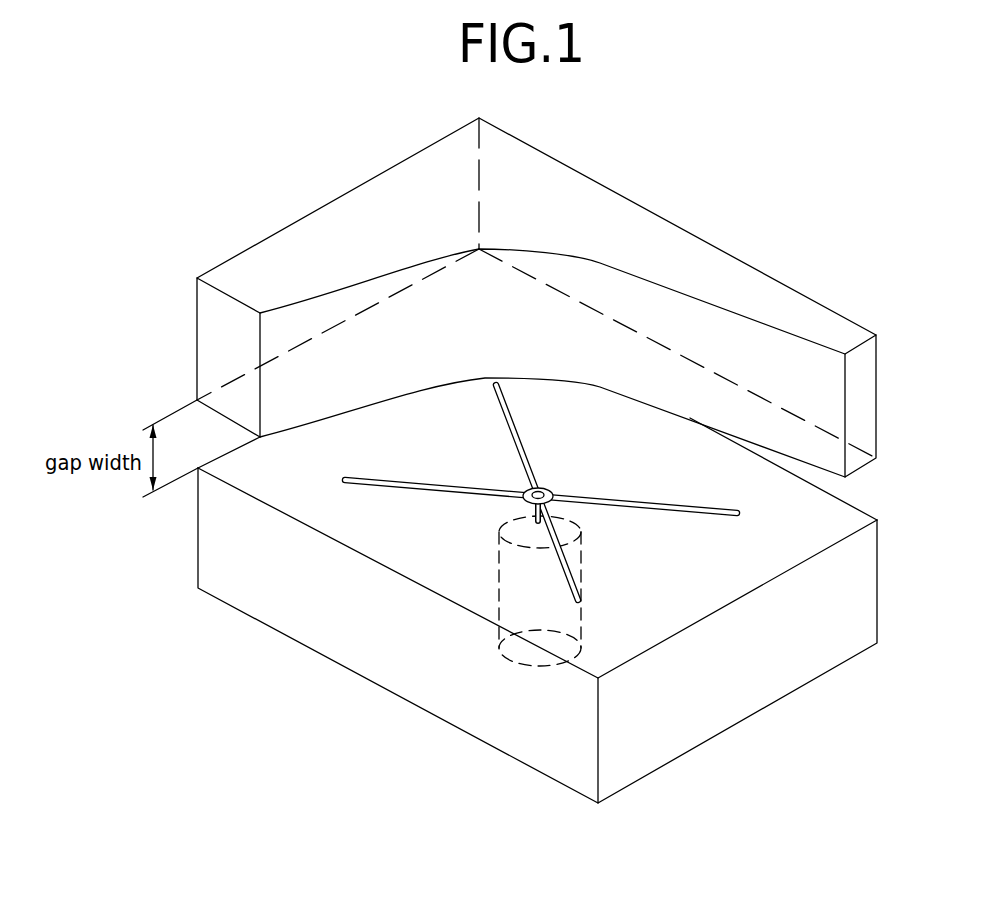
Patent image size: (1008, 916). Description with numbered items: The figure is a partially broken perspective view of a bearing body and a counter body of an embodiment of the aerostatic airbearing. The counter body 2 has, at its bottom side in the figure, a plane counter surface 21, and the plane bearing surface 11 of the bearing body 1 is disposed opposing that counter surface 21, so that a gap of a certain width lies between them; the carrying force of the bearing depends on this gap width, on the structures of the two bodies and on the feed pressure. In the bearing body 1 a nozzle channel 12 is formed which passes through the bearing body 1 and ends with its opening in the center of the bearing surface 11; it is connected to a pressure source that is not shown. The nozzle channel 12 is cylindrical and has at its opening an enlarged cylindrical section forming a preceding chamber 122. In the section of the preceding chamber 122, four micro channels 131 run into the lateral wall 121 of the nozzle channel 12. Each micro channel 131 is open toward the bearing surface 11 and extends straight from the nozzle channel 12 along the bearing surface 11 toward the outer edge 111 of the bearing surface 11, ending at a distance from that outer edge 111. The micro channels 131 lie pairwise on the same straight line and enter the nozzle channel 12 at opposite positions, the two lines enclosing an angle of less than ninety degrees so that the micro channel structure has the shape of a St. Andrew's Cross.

The bearing body 1 is at (560, 610).
The bearing surface 11 is at (850, 515).
The outer edge 111 is at (750, 593).
The nozzle channel 12 is at (495, 597).
The lateral wall 121 is at (522, 500).
The preceding chamber 122 is at (548, 487).
The micro channels 131 is at (520, 425).
The counter body 2 is at (536, 297).
The counter surface 21 is at (443, 347).